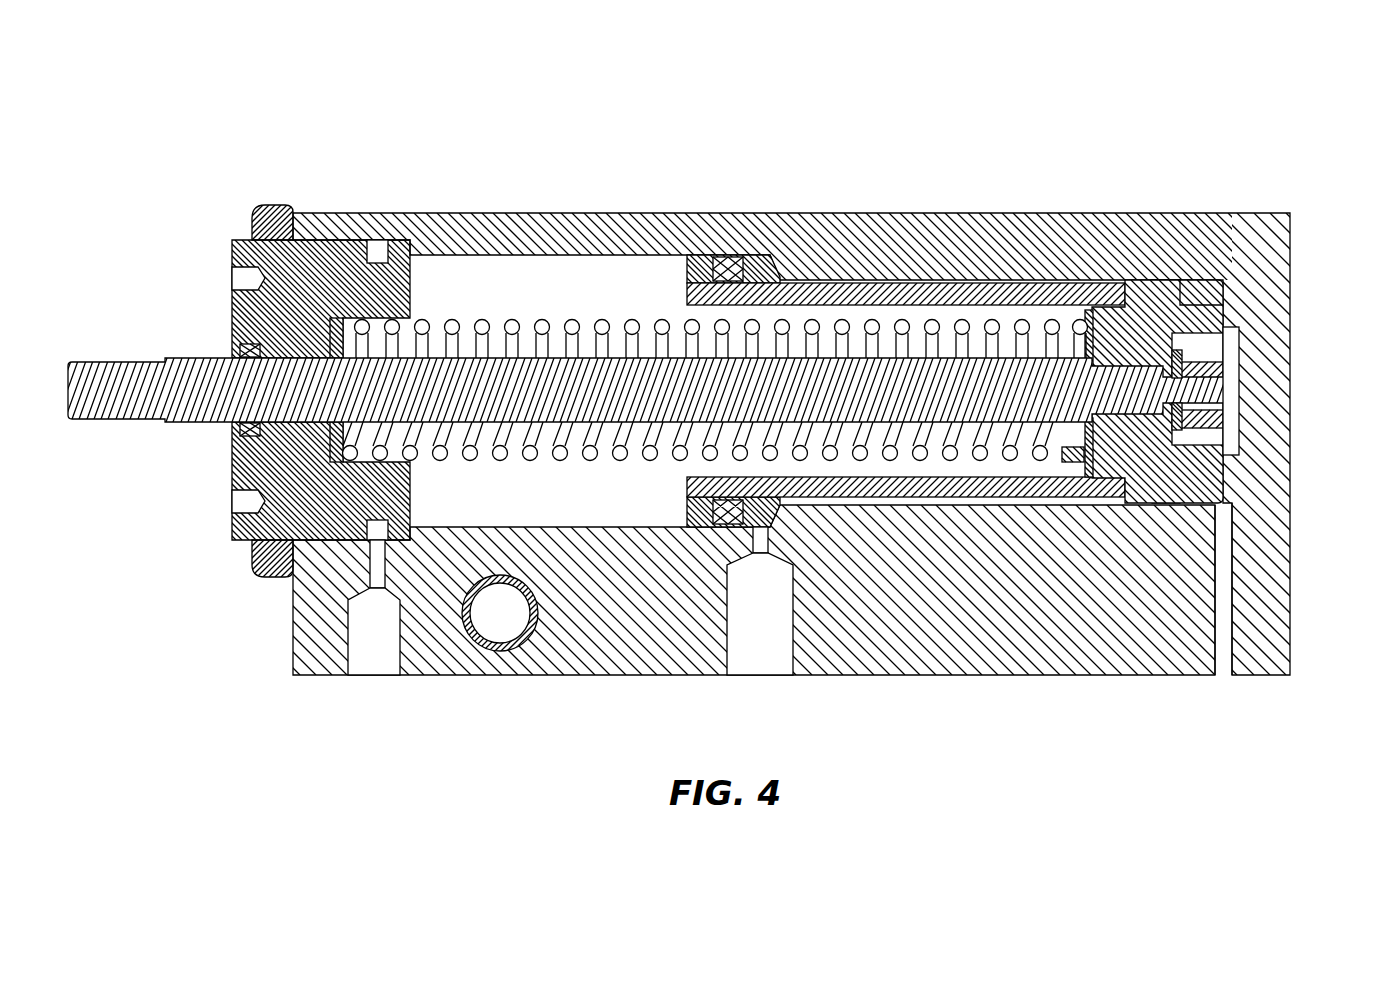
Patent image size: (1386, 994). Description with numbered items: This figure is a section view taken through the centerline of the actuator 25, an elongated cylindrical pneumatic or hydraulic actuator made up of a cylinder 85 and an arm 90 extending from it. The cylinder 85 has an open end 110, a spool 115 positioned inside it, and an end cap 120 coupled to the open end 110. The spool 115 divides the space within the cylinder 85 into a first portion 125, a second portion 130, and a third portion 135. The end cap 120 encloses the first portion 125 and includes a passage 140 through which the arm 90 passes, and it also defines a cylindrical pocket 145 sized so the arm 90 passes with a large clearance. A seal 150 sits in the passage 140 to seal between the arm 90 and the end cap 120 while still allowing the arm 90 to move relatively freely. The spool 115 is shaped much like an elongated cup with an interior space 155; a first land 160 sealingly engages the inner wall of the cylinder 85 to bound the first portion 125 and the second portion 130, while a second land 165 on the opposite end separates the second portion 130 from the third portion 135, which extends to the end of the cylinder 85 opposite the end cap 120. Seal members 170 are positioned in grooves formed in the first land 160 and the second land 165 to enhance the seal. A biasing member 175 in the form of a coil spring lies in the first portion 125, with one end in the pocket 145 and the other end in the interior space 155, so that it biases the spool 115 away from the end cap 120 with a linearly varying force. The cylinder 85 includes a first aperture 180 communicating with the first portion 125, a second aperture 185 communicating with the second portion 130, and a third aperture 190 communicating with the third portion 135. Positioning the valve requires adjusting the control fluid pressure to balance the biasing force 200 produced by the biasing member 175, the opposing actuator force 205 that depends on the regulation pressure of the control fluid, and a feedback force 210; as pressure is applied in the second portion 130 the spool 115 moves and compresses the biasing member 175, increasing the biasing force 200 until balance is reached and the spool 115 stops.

The actuator 25 is at (1014, 130).
The cylinder 85 is at (1140, 235).
The arm 90 is at (100, 403).
The open end 110 is at (275, 263).
The spool 115 is at (1160, 325).
The end cap 120 is at (240, 476).
The first portion 125 is at (548, 275).
The second portion 130 is at (917, 283).
The third portion 135 is at (1212, 440).
The passage 140 is at (230, 350).
The cylindrical pocket 145 is at (400, 336).
The seal 150 is at (308, 423).
The interior space 155 is at (736, 467).
The first land 160 is at (716, 262).
The second land 165 is at (1202, 282).
The seal members 170 is at (728, 262).
The biasing member 175 is at (580, 324).
The first aperture 180 is at (355, 655).
The second aperture 185 is at (732, 655).
The third aperture 190 is at (1226, 660).
The biasing force 200 is at (1015, 460).
The actuator force 205 is at (780, 507).
The feedback force 210 is at (1215, 405).